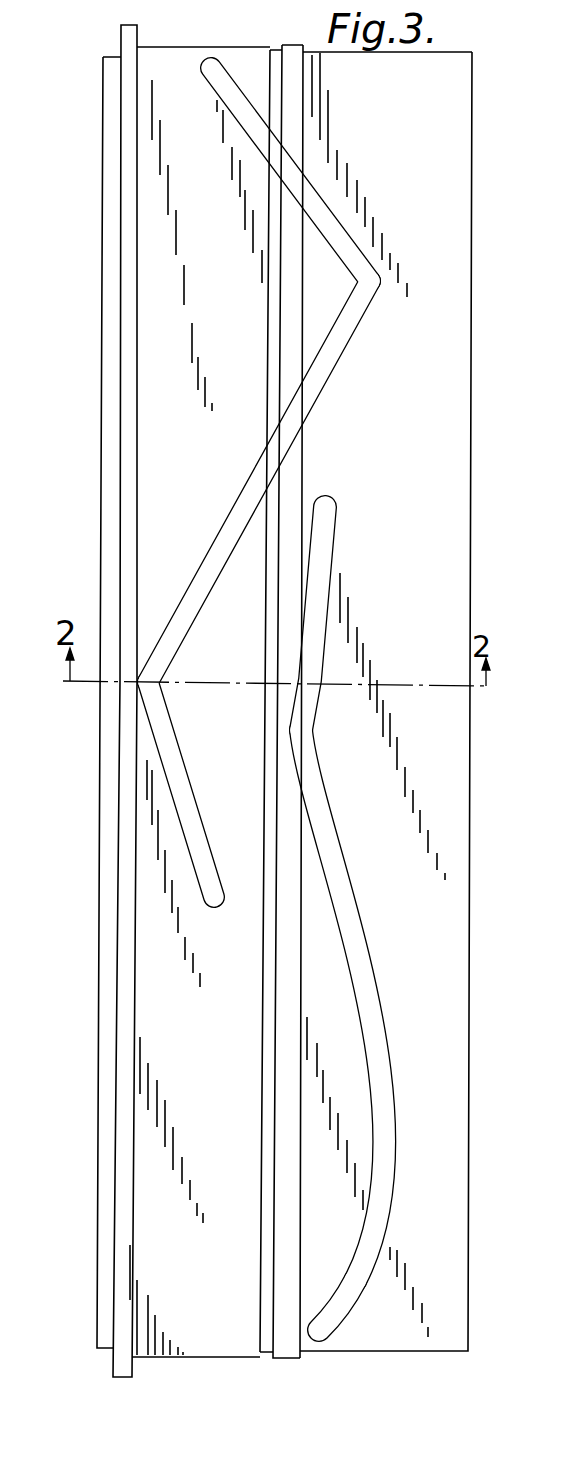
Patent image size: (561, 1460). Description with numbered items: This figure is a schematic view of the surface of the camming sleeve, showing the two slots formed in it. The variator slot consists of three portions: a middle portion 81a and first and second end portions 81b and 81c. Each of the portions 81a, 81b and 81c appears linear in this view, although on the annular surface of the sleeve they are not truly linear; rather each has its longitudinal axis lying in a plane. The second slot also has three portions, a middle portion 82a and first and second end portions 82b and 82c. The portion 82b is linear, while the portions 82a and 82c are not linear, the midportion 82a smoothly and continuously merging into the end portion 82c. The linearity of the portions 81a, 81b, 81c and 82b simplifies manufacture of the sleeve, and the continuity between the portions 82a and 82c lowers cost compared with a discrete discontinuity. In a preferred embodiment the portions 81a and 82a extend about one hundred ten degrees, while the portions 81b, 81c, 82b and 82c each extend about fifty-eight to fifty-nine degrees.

The middle portion of variator slot 81a is at (338, 360).
The first end portion of variator slot 81b is at (328, 218).
The second end portion of variator slot 81c is at (168, 800).
The middle portion of slot 82a is at (383, 1005).
The first end portion of slot 82b is at (325, 537).
The second end portion of slot 82c is at (348, 1320).